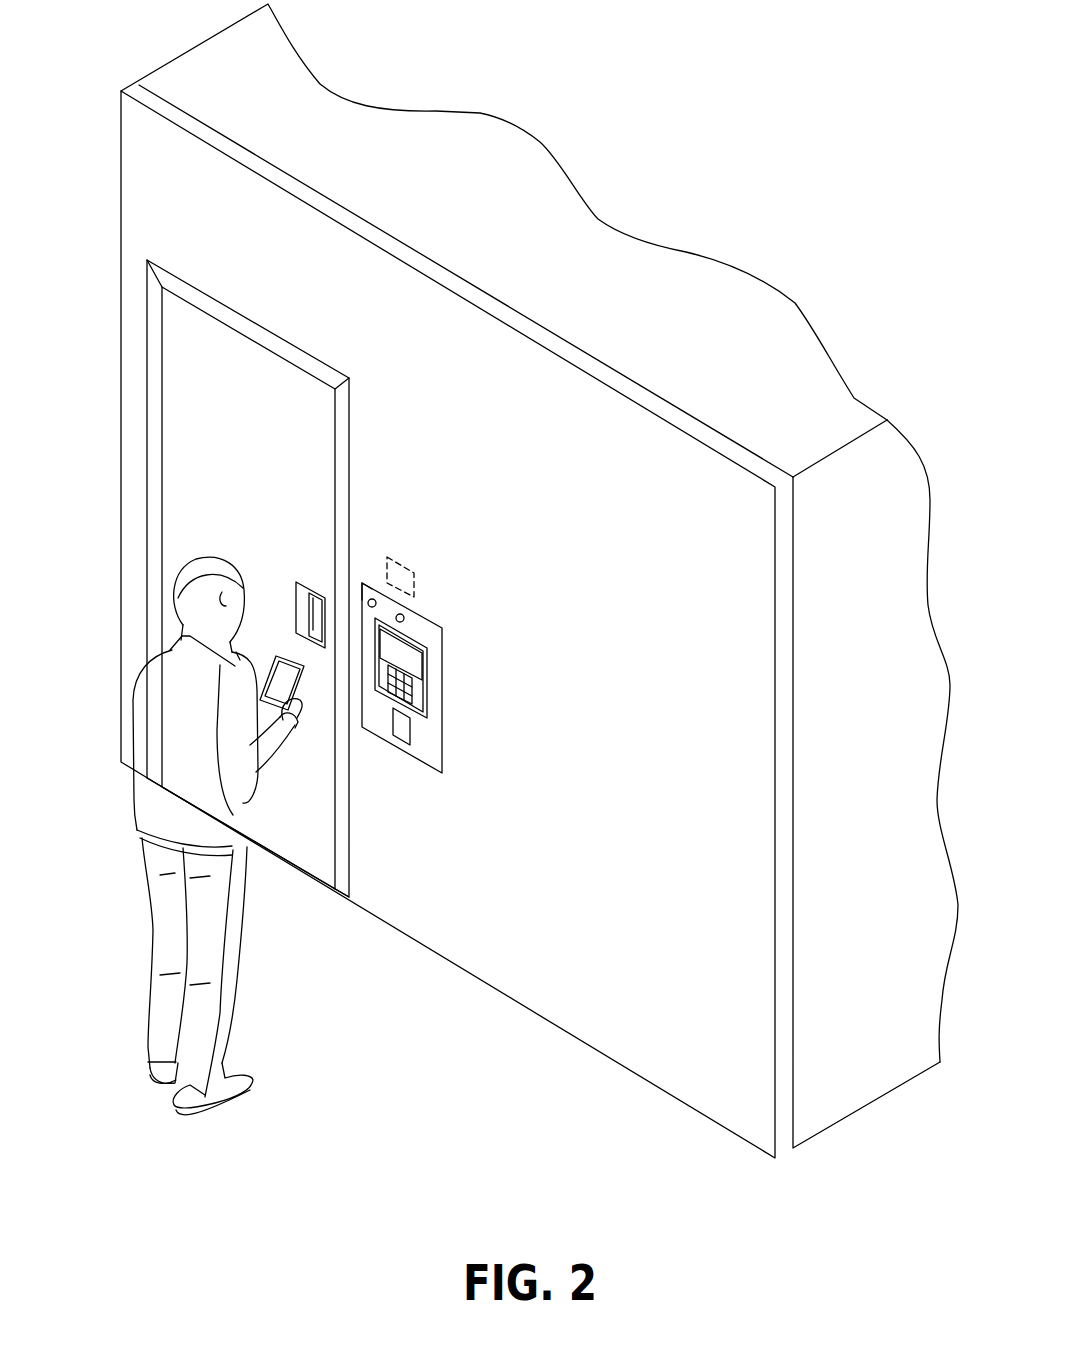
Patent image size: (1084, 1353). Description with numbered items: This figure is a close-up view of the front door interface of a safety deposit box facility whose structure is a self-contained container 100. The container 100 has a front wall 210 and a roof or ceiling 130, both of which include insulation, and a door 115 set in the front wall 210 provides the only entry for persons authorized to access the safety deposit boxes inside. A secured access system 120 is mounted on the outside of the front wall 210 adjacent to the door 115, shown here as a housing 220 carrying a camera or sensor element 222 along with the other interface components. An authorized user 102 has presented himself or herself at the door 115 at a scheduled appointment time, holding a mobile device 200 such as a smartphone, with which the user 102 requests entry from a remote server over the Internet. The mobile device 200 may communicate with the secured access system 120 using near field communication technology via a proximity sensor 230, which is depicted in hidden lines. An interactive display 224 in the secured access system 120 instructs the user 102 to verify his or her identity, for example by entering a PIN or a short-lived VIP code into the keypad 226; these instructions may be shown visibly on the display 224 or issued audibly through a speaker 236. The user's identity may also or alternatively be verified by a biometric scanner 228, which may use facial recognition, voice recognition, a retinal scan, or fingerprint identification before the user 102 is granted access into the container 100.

The container 100 is at (539, 579).
The user 102 is at (170, 783).
The door 115 is at (187, 411).
The secured access system 120 is at (456, 631).
The roof or ceiling 130 is at (524, 222).
The mobile device 200 is at (287, 660).
The front wall 210 is at (680, 652).
The housing 220 is at (443, 748).
The camera 222 is at (408, 623).
The interactive display 224 is at (413, 662).
The keypad 226 is at (412, 687).
The biometric scanner 228 is at (400, 730).
The proximity sensor 230 is at (410, 568).
The speaker 236 is at (362, 583).